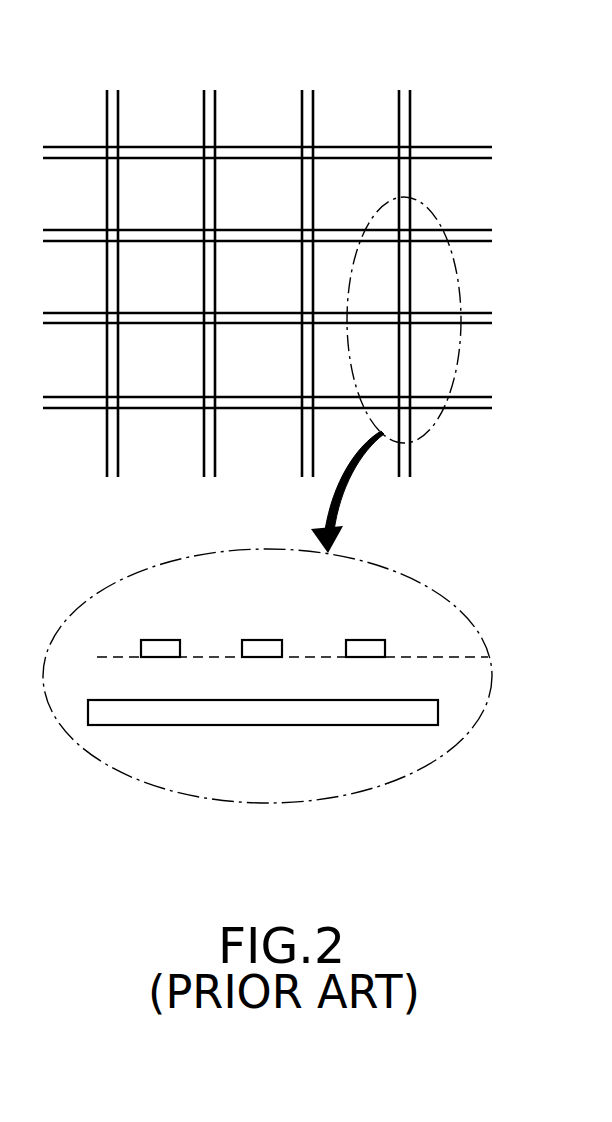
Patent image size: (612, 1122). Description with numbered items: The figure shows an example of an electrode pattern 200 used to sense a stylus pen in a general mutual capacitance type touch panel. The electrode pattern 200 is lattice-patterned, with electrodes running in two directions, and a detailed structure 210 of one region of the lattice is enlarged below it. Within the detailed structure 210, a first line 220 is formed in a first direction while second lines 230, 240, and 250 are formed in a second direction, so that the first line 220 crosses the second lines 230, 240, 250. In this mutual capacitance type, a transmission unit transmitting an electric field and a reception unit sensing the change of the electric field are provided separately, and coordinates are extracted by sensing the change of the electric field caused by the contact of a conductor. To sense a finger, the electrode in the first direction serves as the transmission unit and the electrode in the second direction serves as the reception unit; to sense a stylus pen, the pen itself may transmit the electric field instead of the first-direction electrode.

The electrode pattern 200 is at (473, 88).
The detailed structure 210 is at (386, 203).
The first line 220 is at (411, 458).
The second line 230 is at (473, 395).
The second line 240 is at (472, 311).
The second line 250 is at (472, 229).